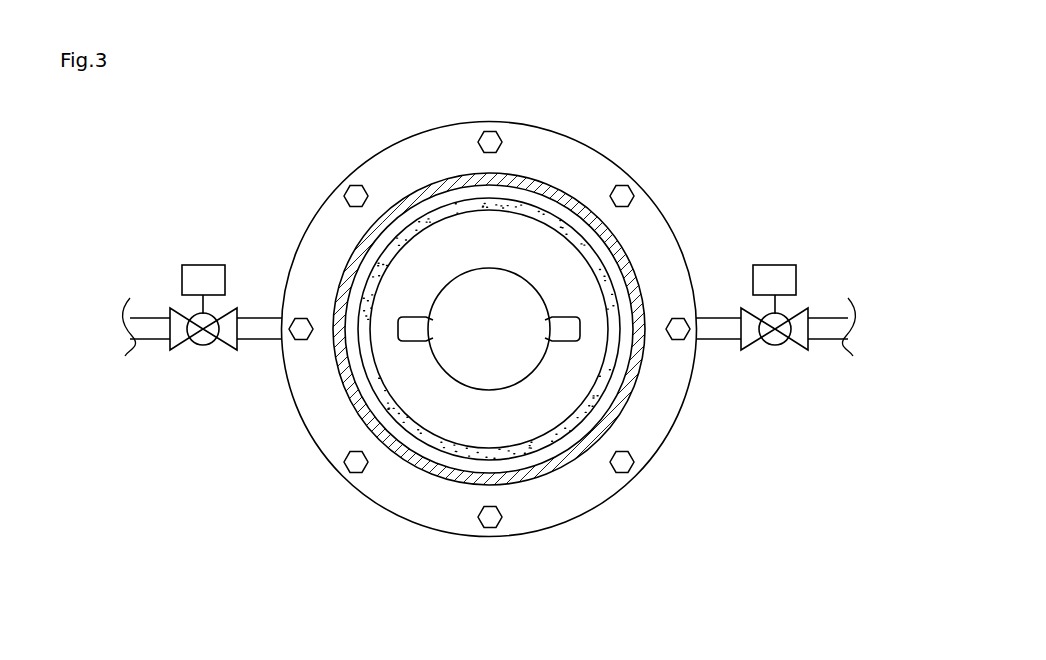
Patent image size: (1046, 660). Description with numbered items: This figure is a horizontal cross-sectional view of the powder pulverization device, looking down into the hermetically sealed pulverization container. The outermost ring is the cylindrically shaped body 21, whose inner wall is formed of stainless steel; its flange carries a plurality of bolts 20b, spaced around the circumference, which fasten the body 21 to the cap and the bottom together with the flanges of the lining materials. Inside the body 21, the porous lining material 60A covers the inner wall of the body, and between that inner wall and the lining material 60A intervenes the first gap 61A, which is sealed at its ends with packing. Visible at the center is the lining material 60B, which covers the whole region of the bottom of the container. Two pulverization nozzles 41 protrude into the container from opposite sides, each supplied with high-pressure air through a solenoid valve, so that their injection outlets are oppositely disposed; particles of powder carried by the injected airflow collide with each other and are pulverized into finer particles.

The bolts 20b is at (346, 191).
The body 21 is at (620, 420).
The pulverization nozzles 41 is at (258, 312).
The lining material 60A is at (652, 390).
The lining material 60B is at (435, 415).
The first gap 61A is at (551, 453).